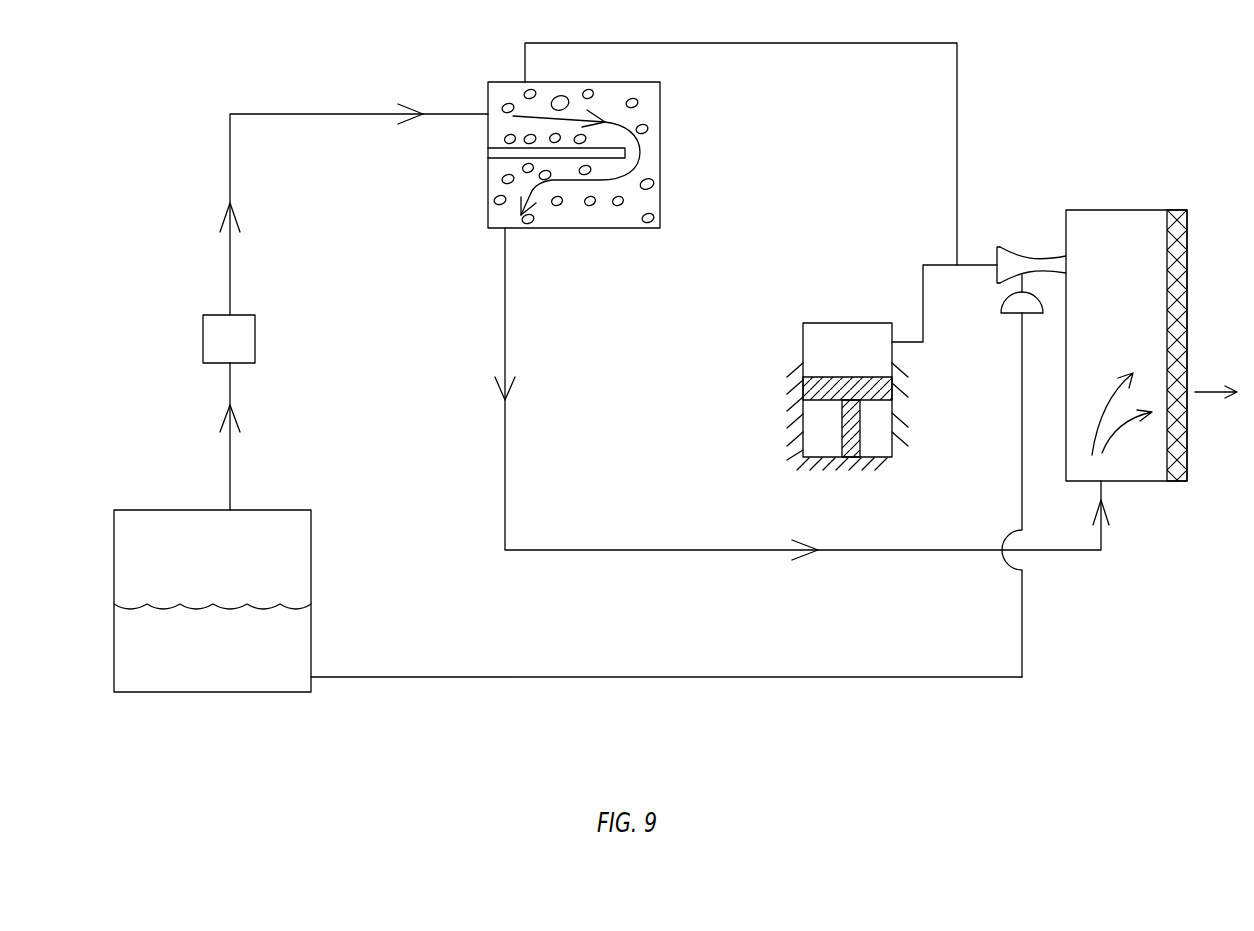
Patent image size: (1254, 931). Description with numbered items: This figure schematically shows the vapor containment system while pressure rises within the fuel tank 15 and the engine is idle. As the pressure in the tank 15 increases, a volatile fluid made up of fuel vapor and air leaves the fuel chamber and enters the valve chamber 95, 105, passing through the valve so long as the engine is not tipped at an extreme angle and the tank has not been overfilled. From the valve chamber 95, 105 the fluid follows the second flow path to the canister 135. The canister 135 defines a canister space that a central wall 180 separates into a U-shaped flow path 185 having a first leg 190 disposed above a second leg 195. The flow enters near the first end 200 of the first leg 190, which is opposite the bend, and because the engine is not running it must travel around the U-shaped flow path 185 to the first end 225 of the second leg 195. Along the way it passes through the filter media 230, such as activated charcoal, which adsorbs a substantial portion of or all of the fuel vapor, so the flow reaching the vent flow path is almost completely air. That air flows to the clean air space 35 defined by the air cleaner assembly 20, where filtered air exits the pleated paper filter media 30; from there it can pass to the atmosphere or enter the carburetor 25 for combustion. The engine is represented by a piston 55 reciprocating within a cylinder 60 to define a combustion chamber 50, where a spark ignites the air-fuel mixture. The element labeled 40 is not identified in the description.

The fuel tank 15 is at (303, 537).
The air cleaner assembly 20 is at (1126, 357).
The carburetor 25 is at (1007, 250).
The filter media 30 is at (1166, 453).
The clean air space 35 is at (1147, 295).
The valve 40 is at (1013, 310).
The combustion chamber 50 is at (810, 368).
The piston 55 is at (820, 377).
The cylinder 60 is at (800, 415).
The valve chamber 95 is at (280, 337).
The valve chamber 105 is at (240, 328).
The canister 135 is at (586, 155).
The central wall 180 is at (503, 155).
The U-shaped flow path 185 is at (662, 188).
The first leg 190 is at (563, 90).
The second leg 195 is at (582, 212).
The first end of the first leg 200 is at (503, 80).
The first end of the second leg 225 is at (498, 204).
The filter media 230 is at (646, 126).